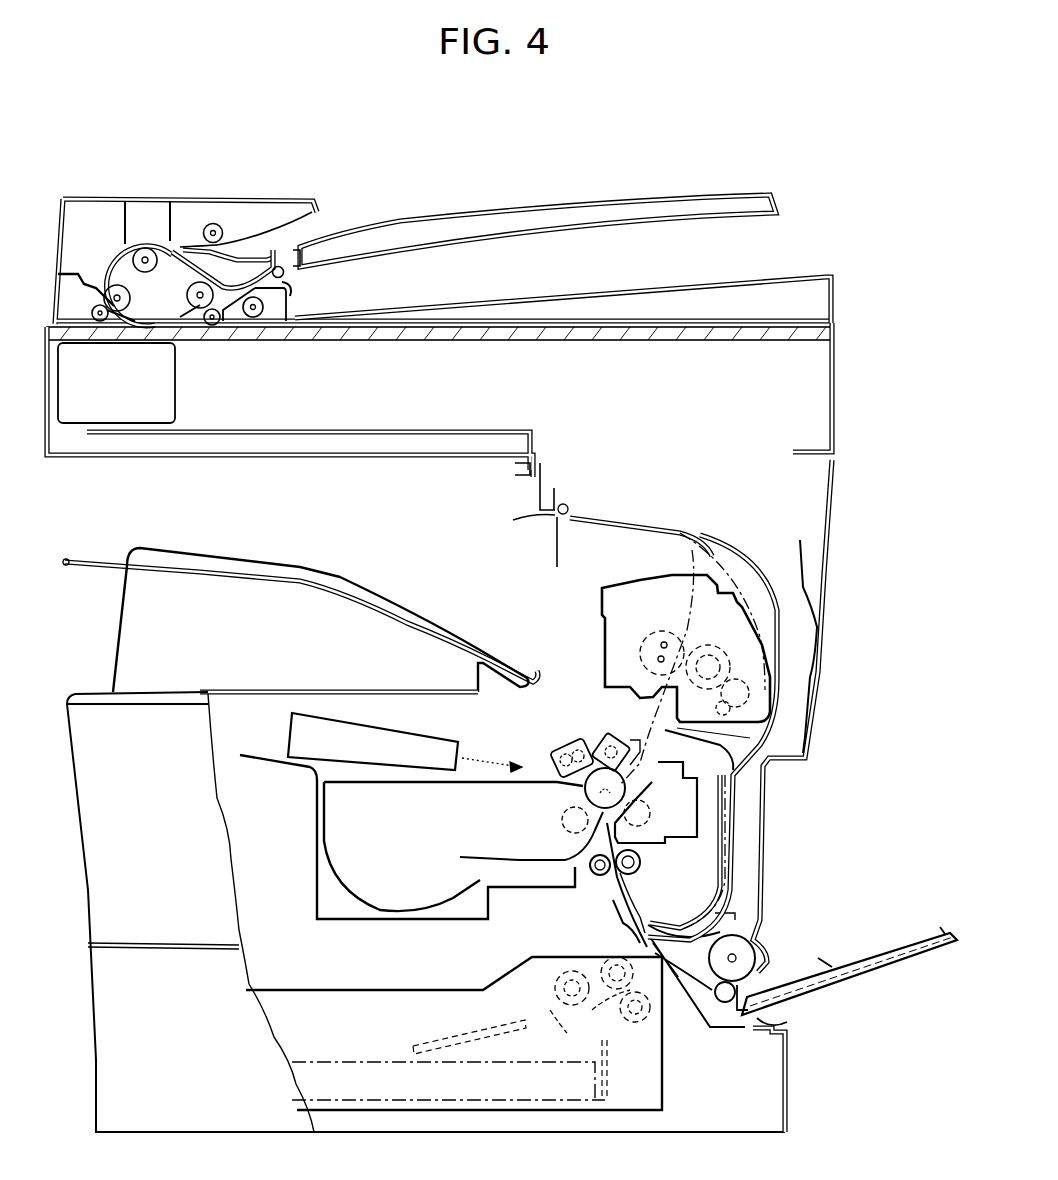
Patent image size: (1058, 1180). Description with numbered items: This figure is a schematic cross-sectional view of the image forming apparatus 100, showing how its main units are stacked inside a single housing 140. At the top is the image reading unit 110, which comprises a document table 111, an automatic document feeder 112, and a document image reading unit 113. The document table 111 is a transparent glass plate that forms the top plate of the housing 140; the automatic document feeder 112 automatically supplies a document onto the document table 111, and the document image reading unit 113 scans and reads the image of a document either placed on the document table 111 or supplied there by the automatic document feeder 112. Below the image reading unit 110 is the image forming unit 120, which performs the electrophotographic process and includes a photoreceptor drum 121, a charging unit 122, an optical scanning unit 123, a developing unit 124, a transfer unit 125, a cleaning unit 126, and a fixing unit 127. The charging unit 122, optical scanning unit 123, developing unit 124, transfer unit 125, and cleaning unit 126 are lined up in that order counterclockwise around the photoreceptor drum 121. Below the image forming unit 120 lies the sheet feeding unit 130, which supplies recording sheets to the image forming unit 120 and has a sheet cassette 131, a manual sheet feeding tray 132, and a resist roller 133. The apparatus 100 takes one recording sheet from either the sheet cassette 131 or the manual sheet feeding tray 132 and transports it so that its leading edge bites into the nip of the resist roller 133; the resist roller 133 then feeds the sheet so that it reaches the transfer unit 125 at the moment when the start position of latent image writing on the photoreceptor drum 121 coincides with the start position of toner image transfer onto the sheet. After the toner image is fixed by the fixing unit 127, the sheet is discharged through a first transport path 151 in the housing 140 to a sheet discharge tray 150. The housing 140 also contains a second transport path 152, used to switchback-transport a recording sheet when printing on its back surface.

The image forming apparatus 100 is at (851, 351).
The image reading unit 110 is at (357, 152).
The document table 111 is at (368, 337).
The automatic document feeder 112 is at (250, 255).
The document image reading unit 113 is at (145, 362).
The image forming unit 120 is at (548, 706).
The photoreceptor drum 121 is at (592, 789).
The charging unit 122 is at (560, 753).
The optical scanning unit 123 is at (296, 735).
The developing unit 124 is at (560, 822).
The transfer unit 125 is at (650, 830).
The cleaning unit 126 is at (610, 742).
The fixing unit 127 is at (737, 665).
The sheet feeding unit 130 is at (882, 1003).
The sheet cassette 131 is at (652, 1075).
The manual sheet feeding tray 132 is at (818, 978).
The resist roller 133 is at (632, 870).
The housing 140 is at (834, 418).
The sheet discharge tray 150 is at (95, 562).
The first transport path 151 is at (667, 735).
The second transport path 152 is at (779, 615).